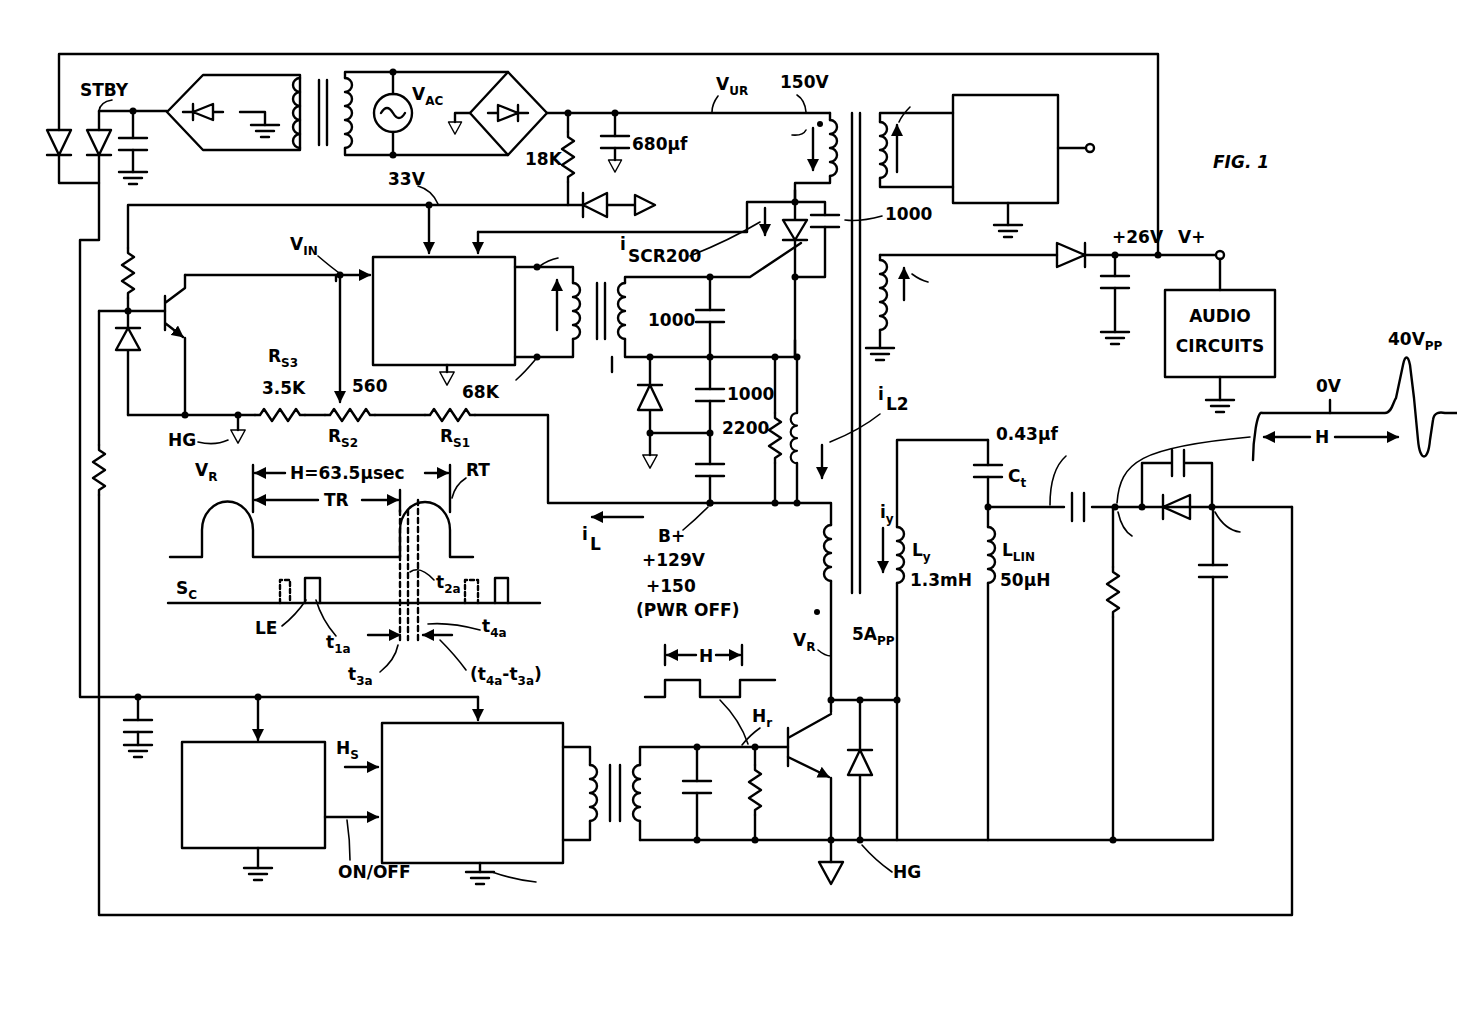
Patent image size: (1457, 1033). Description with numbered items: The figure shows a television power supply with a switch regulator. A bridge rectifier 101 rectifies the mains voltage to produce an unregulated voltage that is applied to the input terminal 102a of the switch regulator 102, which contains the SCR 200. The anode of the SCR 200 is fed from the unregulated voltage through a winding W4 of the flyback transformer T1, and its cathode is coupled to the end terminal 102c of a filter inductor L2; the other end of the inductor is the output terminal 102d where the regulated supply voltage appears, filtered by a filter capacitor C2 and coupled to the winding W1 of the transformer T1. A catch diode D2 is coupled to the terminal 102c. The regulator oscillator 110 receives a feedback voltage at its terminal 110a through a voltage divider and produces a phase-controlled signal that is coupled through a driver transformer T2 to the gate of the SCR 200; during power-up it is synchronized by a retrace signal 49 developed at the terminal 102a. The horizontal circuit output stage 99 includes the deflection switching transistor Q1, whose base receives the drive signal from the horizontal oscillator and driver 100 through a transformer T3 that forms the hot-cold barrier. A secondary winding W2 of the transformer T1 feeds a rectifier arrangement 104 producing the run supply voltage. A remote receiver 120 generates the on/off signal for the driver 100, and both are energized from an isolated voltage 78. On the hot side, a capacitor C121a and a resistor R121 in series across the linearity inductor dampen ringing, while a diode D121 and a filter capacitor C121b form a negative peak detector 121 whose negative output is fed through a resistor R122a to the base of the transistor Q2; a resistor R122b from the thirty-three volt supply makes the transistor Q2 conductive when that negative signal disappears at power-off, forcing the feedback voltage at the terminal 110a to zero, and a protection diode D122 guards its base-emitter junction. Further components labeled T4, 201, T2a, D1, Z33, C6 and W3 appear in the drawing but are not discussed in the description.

The retrace signal 49 is at (478, 234).
The voltage 78 is at (258, 694).
The horizontal circuit output stage 99 is at (886, 684).
The horizontal oscillator and driver 100 is at (535, 723).
The bridge rectifier 101 is at (497, 113).
The switch regulator 102 is at (748, 266).
The input terminal 102a is at (790, 190).
The end terminal 102c is at (798, 350).
The output terminal 102d is at (716, 503).
The rectifier arrangement 104 is at (1072, 243).
The regulator oscillator 110 is at (390, 257).
The terminal 110a is at (340, 280).
The remote receiver 120 is at (185, 851).
The negative peak detector 121 is at (1141, 628).
The SCR 200 is at (787, 250).
The ultor power supply 201 is at (980, 95).
The flyback transformer T1 is at (949, 409).
The driver transformer T2 is at (612, 276).
The transformer T2 secondary T2a is at (610, 375).
The transformer T3 is at (644, 882).
The standby power transformer T4 is at (337, 82).
The deflection switching transistor Q1 is at (815, 799).
The transistor Q2 is at (189, 345).
The damper diode D1 is at (874, 772).
The catch diode D2 is at (656, 411).
The diode D121 is at (1195, 497).
The protection diode D122 is at (152, 371).
The 33V zener diode Z33 is at (622, 202).
The resistor R121 is at (1140, 675).
The resistor R122a is at (131, 470).
The resistor R122b is at (160, 273).
The filter capacitor C2 is at (695, 476).
The +26V filter capacitor C6 is at (1110, 320).
The capacitor C121a is at (1087, 510).
The filter capacitor C121b is at (1155, 661).
The filter inductor L2 is at (827, 430).
The winding W1 is at (826, 574).
The secondary winding W2 is at (890, 316).
The high voltage winding W3 is at (890, 172).
The winding W4 is at (828, 112).